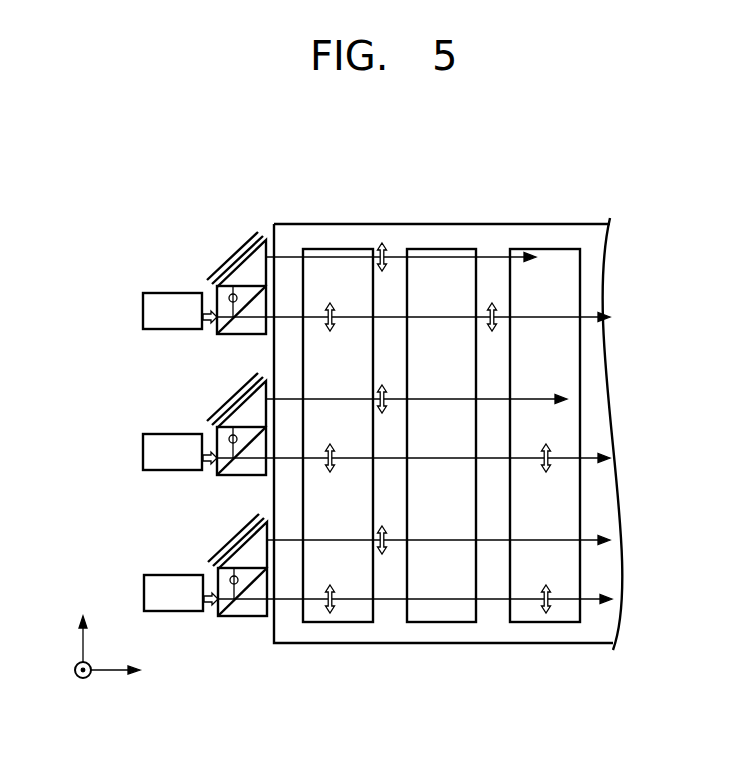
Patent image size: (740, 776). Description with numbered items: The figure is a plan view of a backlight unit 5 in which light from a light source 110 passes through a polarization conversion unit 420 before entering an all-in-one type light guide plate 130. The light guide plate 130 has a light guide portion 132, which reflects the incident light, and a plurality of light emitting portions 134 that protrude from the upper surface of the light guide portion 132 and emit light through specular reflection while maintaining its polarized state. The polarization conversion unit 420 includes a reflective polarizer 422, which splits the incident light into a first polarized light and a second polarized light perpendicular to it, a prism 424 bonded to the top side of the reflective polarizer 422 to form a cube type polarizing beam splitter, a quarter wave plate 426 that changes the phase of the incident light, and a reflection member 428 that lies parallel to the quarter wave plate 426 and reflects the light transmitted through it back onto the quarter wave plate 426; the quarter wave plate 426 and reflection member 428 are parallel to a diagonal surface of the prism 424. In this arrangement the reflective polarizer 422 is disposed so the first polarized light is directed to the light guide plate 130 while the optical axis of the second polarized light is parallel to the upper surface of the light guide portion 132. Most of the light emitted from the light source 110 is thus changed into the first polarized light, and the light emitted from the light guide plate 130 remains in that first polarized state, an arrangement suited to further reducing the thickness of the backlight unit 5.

The backlight unit 5 is at (648, 188).
The light source 110 is at (143, 313).
The light guide plate 130 is at (556, 166).
The light guide portion 132 is at (482, 240).
The light emitting portions 134 is at (546, 255).
The polarization conversion unit 420 is at (268, 338).
The reflective polarizer 422 is at (222, 298).
The prism 424 is at (230, 266).
The quarter wave plate 426 is at (263, 235).
The reflection member 428 is at (249, 236).